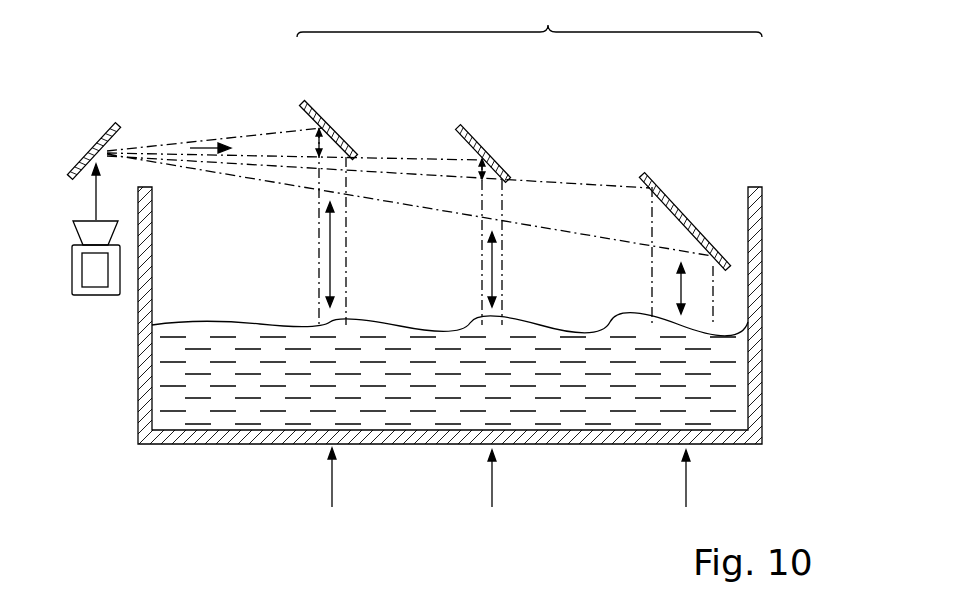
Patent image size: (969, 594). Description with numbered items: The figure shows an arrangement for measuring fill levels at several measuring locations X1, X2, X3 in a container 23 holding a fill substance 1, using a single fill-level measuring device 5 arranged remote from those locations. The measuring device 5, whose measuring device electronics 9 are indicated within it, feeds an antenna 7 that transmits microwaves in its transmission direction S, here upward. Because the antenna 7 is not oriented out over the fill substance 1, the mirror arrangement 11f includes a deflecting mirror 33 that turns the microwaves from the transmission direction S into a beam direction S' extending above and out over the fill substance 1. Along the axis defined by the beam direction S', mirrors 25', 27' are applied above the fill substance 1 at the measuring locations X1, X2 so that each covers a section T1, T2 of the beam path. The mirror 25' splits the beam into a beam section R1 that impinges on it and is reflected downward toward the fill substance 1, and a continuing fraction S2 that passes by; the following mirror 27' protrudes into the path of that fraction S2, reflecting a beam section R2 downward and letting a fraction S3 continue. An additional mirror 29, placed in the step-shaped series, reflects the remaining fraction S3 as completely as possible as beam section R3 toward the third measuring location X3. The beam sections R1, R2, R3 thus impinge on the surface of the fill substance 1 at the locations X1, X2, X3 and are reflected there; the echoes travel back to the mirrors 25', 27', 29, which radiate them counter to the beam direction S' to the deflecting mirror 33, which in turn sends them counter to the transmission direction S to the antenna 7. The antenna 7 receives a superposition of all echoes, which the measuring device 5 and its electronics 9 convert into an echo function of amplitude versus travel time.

The fill substance 1 is at (232, 402).
The fill-level measuring device 5 is at (93, 290).
The antenna 7 is at (90, 238).
The measuring device electronics 9 is at (101, 279).
The container 23 is at (752, 252).
The mirror 25' is at (331, 115).
The mirror 27' is at (494, 146).
The additional mirror 29 is at (672, 203).
The deflecting mirror 33 is at (97, 147).
The mirror arrangement 11f is at (529, 20).
The transmission direction S is at (72, 192).
The beam direction S' is at (206, 121).
The continuing beam fraction S2 is at (388, 155).
The continuing beam fraction S3 is at (603, 187).
The section of the beam path T1 is at (315, 140).
The section of the beam path T2 is at (478, 169).
The beam section R1 is at (329, 258).
The beam section R2 is at (491, 267).
The beam section R3 is at (680, 290).
The measuring location X1 is at (332, 487).
The measuring location X2 is at (492, 487).
The measuring location X3 is at (686, 487).